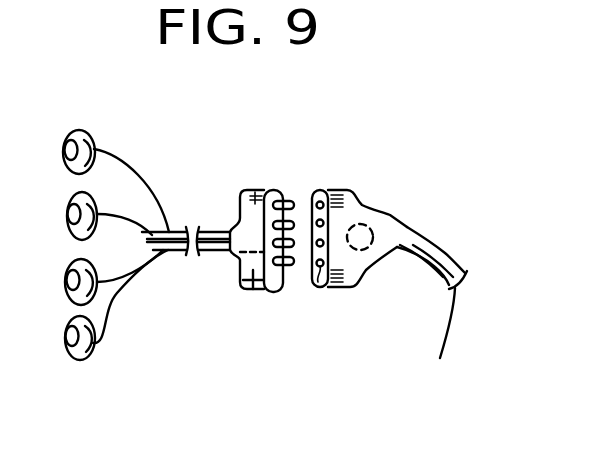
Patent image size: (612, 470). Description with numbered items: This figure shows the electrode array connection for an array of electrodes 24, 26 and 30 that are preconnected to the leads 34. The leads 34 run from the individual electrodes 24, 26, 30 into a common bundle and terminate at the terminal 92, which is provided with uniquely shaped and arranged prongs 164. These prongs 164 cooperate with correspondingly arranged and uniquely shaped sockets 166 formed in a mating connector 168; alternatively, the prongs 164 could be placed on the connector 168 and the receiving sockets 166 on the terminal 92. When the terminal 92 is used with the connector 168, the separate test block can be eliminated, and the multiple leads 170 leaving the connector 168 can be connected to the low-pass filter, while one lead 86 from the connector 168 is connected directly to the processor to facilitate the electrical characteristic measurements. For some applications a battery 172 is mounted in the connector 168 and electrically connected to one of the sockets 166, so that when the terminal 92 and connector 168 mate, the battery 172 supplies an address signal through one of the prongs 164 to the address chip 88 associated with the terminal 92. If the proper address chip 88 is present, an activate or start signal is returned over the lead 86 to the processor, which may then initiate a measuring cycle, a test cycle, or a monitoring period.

The electrode 24 is at (81, 261).
The electrode 26 is at (87, 132).
The electrode 30 is at (88, 352).
The leads 34 is at (174, 254).
The lead 86 is at (449, 320).
The address chip 88 is at (256, 291).
The terminal 92 is at (254, 195).
The prongs 164 is at (287, 205).
The sockets 166 is at (317, 289).
The connector 168 is at (392, 214).
The multiple leads 170 is at (438, 250).
The battery 172 is at (358, 224).